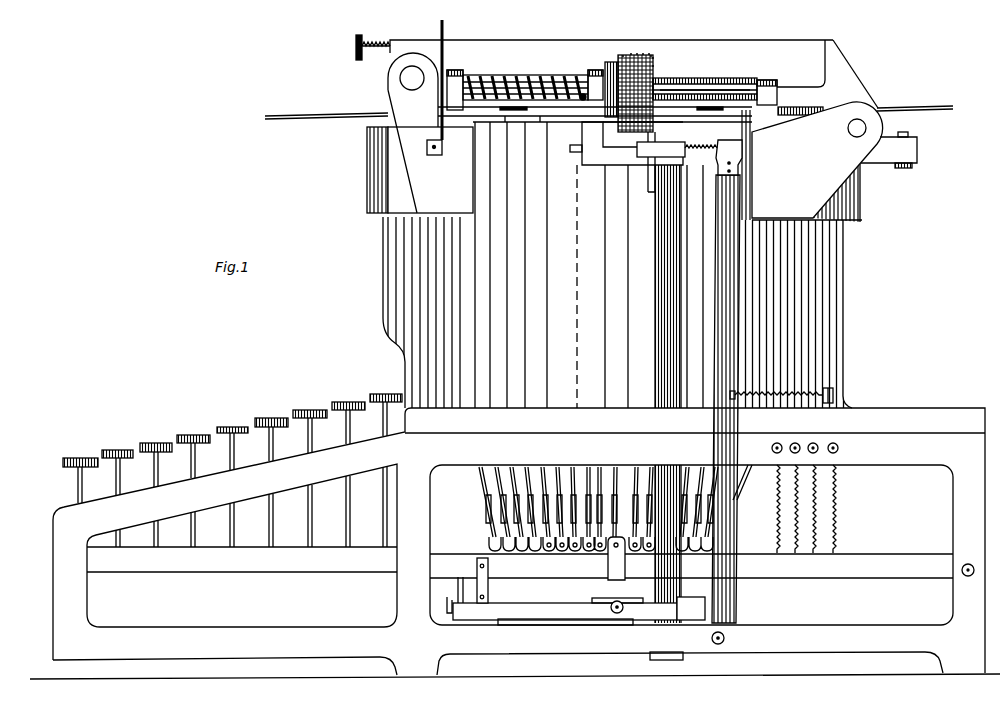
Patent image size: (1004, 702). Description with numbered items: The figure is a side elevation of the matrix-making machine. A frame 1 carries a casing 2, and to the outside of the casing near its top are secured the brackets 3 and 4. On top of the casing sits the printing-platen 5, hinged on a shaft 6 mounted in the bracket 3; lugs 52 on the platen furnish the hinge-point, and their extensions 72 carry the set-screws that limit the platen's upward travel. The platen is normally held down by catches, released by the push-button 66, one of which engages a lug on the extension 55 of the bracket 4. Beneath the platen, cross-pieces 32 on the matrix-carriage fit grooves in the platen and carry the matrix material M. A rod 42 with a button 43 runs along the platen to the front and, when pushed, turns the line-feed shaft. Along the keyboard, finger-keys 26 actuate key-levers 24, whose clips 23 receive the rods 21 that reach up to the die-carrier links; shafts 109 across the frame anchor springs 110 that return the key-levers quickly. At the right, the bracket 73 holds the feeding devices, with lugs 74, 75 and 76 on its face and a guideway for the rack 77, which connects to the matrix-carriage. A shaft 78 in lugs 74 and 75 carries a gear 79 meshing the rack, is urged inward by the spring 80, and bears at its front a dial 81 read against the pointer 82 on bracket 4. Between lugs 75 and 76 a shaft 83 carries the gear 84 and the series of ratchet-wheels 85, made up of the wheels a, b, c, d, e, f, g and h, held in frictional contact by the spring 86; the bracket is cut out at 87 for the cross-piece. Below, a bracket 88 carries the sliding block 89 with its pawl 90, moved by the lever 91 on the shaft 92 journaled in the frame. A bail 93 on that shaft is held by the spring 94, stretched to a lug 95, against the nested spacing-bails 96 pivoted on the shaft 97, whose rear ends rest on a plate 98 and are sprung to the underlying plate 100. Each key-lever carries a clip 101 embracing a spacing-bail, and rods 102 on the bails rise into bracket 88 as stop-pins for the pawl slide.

The frame 1 is at (524, 541).
The casing 2 is at (380, 260).
The bracket 3 is at (868, 210).
The bracket 4 is at (340, 206).
The printing-platen 5 is at (611, 63).
The shaft 6 is at (848, 129).
The rods 21 is at (742, 484).
The clips 23 is at (498, 540).
The key-levers 24 is at (520, 562).
The finger-keys 26 is at (232, 466).
The cross-pieces 32 is at (508, 120).
The rod 42 is at (381, 40).
The button 43 is at (354, 47).
The lugs 52 is at (862, 76).
The extension 55 is at (413, 133).
The push-button 66 is at (412, 78).
The extensions 72 is at (912, 180).
The bracket 73 is at (542, 123).
The lug 74 is at (458, 68).
The lug 75 is at (590, 68).
The lug 76 is at (767, 78).
The rack 77 is at (600, 110).
The shaft 78 is at (540, 74).
The gear 79 is at (622, 54).
The spring 80 is at (502, 74).
The dial 81 is at (441, 70).
The pointer 82 is at (437, 138).
The shaft 83 is at (735, 78).
The gear 84 is at (600, 96).
The ratchet-wheels 85 is at (656, 72).
The spring 86 is at (708, 84).
The cut-out 87 is at (512, 112).
The bracket 88 is at (586, 166).
The sliding block 89 is at (672, 142).
The pawl 90 is at (648, 185).
The lever 91 is at (716, 260).
The shaft 92 is at (725, 638).
The bail 93 is at (508, 626).
The spring 94 is at (788, 404).
The lug 95 is at (835, 395).
The spacing-bails 96 is at (565, 609).
The shaft 97 is at (617, 615).
The plate 98 is at (686, 622).
The plate 100 is at (674, 662).
The clip 101 is at (488, 570).
The rod 102 is at (655, 352).
The shafts 109 is at (840, 448).
The springs 110 is at (837, 503).
The matrix material M is at (609, 103).
The ratchet-wheel a is at (654, 66).
The ratchet-wheel b is at (652, 58).
The ratchet-wheel c is at (650, 56).
The ratchet-wheel d is at (648, 54).
The ratchet-wheel e is at (642, 54).
The ratchet-wheel f is at (636, 54).
The ratchet-wheel g is at (630, 54).
The ratchet-wheel h is at (623, 46).